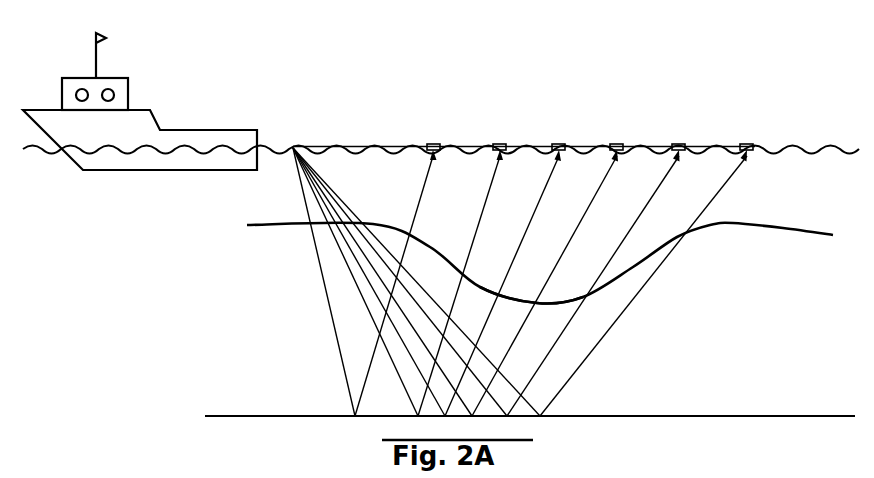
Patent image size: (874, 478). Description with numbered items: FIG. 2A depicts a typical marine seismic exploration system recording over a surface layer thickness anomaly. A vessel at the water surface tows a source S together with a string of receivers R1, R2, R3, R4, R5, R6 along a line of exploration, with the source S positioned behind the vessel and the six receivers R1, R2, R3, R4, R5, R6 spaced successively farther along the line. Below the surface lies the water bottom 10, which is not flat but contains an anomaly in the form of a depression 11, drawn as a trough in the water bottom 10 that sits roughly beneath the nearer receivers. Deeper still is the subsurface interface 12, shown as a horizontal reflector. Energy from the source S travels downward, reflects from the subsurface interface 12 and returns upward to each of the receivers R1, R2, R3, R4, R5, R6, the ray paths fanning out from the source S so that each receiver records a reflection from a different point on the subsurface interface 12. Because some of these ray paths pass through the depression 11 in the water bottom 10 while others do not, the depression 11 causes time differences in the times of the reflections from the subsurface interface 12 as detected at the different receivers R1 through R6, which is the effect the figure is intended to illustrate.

The source S is at (412, 265).
The receiver R1 is at (401, 263).
The receiver R2 is at (465, 263).
The receiver R3 is at (506, 263).
The receiver R4 is at (548, 263).
The receiver R5 is at (598, 263).
The receiver R6 is at (648, 263).
The water bottom 10 is at (820, 233).
The depression 11 is at (524, 300).
The subsurface interface 12 is at (625, 416).